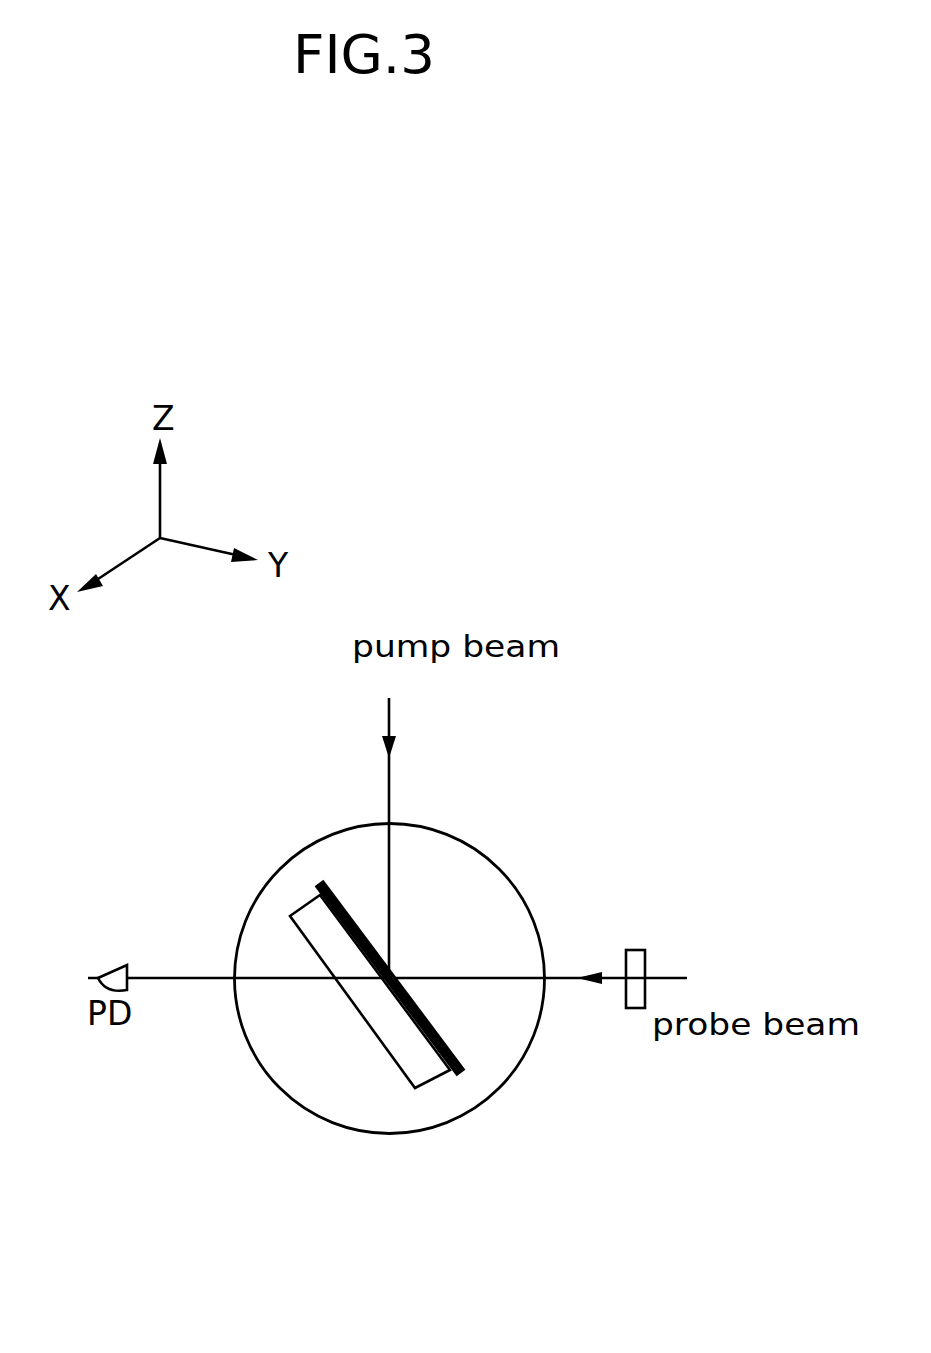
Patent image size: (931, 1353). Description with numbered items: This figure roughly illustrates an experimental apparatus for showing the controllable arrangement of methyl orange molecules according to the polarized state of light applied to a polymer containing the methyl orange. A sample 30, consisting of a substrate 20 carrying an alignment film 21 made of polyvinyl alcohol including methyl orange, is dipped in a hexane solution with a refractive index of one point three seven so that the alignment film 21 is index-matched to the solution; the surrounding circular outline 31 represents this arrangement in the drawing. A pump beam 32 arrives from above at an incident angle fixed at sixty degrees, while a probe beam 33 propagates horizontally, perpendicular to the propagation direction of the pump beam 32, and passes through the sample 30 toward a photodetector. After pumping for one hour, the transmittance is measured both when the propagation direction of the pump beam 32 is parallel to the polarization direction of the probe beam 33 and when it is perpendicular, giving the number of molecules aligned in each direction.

The substrate 20 is at (428, 1072).
The alignment film 21 is at (417, 1003).
The sample 30 is at (360, 1057).
The rotation stage 31 is at (508, 1047).
The pump beam 32 is at (389, 819).
The probe beam 33 is at (655, 979).